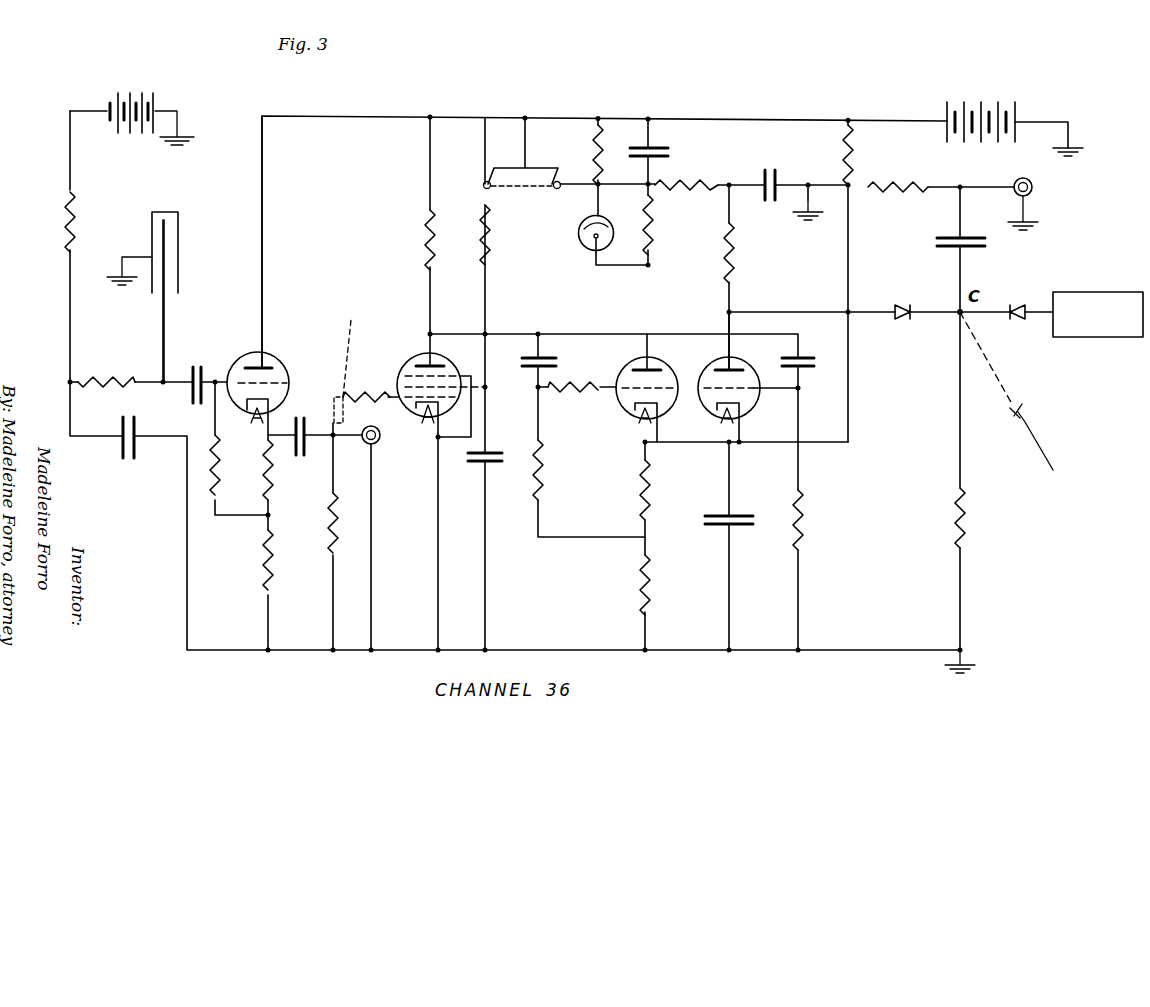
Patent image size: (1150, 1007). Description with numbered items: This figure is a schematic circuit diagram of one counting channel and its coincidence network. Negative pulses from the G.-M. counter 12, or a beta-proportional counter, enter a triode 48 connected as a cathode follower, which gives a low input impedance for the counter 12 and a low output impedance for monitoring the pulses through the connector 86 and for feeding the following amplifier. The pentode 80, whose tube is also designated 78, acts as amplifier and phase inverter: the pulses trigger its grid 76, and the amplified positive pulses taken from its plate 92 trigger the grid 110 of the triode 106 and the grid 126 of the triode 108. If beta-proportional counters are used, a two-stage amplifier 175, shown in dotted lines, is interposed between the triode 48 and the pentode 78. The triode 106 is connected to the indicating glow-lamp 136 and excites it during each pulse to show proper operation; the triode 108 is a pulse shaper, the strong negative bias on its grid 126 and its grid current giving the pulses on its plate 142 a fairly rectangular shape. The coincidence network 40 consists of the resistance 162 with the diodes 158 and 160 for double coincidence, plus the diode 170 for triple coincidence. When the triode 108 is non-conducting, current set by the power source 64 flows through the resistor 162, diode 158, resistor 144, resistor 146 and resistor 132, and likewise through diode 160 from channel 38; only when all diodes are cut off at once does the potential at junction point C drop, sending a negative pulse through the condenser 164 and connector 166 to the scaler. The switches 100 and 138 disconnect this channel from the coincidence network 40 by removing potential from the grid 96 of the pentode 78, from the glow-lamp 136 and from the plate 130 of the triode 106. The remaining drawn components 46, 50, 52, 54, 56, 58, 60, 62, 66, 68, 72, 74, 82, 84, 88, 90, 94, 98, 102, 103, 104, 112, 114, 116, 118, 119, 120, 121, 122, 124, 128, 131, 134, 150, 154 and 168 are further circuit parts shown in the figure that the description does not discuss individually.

The G.-M. counter 12 is at (185, 246).
The channel 38 is at (1098, 314).
The coincidence network 40 is at (896, 272).
The input stage 46 is at (186, 260).
The triode 48 is at (266, 347).
The control grid 50 is at (238, 380).
The electrode lead 52 is at (162, 242).
The coupling capacitor 54 is at (198, 365).
The battery 56 is at (124, 135).
The resistor 58 is at (118, 378).
The resistor 60 is at (62, 235).
The anode 62 is at (272, 368).
The power source 64 is at (975, 105).
The cathode 66 is at (276, 385).
The resistor 68 is at (272, 485).
The grid resistor 72 is at (208, 485).
The capacitor 74 is at (118, 460).
The grid 76 is at (410, 385).
The pentode 78 is at (262, 562).
The pentode 80 is at (422, 359).
The coupling capacitor 82 is at (300, 460).
The grid resistor 84 is at (364, 385).
The connector 86 is at (378, 444).
The resistor 88 is at (329, 540).
The cathode 90 is at (416, 405).
The plate 92 is at (443, 367).
The plate resistor 94 is at (425, 240).
The grid 96 is at (455, 399).
The resistor 98 is at (482, 255).
The switch 100 is at (480, 183).
The capacitor 102 is at (470, 470).
The anode 103 is at (462, 367).
The output tube stage 104 is at (716, 359).
The triode 106 is at (632, 360).
The triode 108 is at (742, 366).
The grid 110 is at (626, 395).
The grid resistor 112 is at (590, 370).
The coupling capacitor 114 is at (545, 345).
The cathode 116 is at (658, 415).
The cathode resistor 118 is at (640, 488).
The resistor 119 is at (806, 518).
The resistor 120 is at (640, 580).
The capacitor 121 is at (745, 516).
The resistor 122 is at (546, 465).
The cathode 124 is at (738, 408).
The grid 126 is at (752, 385).
The capacitor 128 is at (805, 358).
The plate 130 is at (648, 365).
The resistor 131 is at (654, 225).
The resistor 132 is at (594, 158).
The capacitor 134 is at (668, 150).
The glow-lamp 136 is at (610, 228).
The switch 138 is at (552, 190).
The plate 142 is at (733, 360).
The resistor 144 is at (738, 263).
The resistor 146 is at (696, 185).
The capacitor 150 is at (768, 170).
The resistor 154 is at (858, 153).
The diode 158 is at (902, 322).
The diode 160 is at (1013, 322).
The resistance 162 is at (948, 525).
The condenser 164 is at (968, 248).
The connector 166 is at (1035, 185).
The resistor 168 is at (896, 198).
The diode 170 is at (1026, 414).
The two-stage amplifier 175 is at (333, 362).